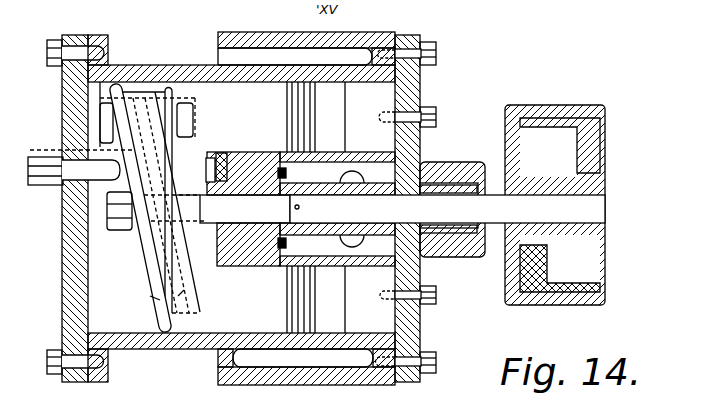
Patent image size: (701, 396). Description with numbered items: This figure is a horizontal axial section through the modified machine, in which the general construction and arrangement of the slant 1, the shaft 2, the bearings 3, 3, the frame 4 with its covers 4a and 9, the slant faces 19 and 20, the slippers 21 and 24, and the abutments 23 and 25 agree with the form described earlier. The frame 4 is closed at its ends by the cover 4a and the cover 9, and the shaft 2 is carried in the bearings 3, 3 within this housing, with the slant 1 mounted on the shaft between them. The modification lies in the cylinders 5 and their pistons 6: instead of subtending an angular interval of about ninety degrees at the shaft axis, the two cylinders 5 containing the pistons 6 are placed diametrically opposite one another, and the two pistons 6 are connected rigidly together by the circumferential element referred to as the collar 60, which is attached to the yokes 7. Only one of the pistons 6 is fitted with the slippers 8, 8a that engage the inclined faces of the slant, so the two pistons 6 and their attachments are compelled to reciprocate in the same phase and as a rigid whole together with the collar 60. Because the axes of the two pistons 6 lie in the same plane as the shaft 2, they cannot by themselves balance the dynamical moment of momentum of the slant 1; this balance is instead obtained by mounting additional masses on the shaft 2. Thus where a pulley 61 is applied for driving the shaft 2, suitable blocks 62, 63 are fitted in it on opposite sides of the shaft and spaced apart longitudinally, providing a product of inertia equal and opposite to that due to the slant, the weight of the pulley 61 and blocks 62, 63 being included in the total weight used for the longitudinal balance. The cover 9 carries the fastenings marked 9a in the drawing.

The slant 1 is at (184, 287).
The shaft 2 is at (441, 209).
The bearings 3 is at (272, 190).
The frame 4 is at (215, 45).
The cover 4a is at (65, 112).
The cylinders 5 is at (333, 207).
The pistons 6 is at (284, 207).
The yokes 7 is at (132, 90).
The slipper 8 is at (127, 123).
The slipper 8a is at (168, 65).
The cover 9 is at (410, 98).
The cover bolts 9a is at (376, 215).
The slant face 19 is at (143, 246).
The slant face 20 is at (209, 232).
The slipper 21 is at (150, 202).
The abutment 23 is at (107, 232).
The slipper 24 is at (211, 158).
The abutment 25 is at (228, 152).
The collar 60 is at (155, 296).
The pulley 61 is at (548, 104).
The block 62 is at (583, 147).
The block 63 is at (540, 266).